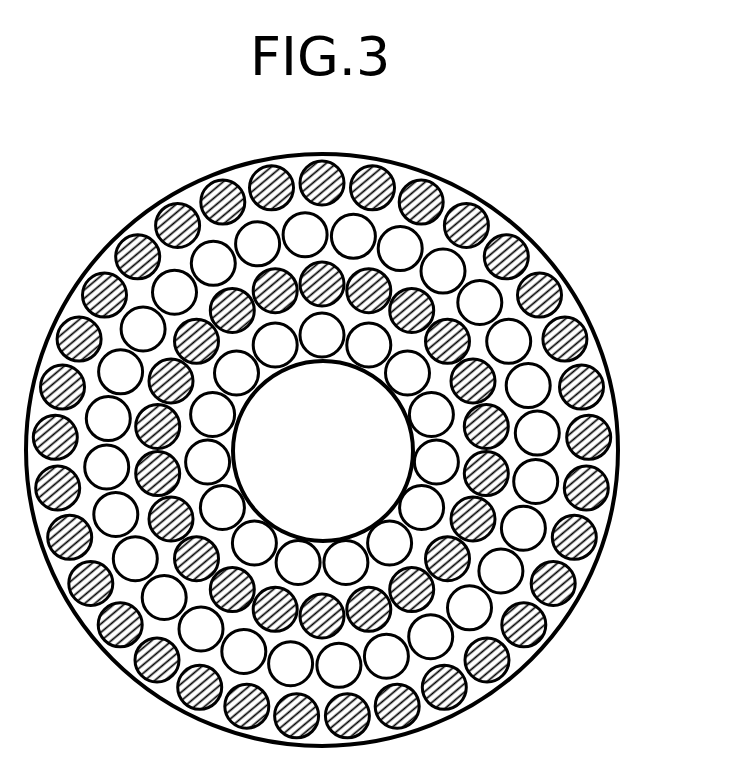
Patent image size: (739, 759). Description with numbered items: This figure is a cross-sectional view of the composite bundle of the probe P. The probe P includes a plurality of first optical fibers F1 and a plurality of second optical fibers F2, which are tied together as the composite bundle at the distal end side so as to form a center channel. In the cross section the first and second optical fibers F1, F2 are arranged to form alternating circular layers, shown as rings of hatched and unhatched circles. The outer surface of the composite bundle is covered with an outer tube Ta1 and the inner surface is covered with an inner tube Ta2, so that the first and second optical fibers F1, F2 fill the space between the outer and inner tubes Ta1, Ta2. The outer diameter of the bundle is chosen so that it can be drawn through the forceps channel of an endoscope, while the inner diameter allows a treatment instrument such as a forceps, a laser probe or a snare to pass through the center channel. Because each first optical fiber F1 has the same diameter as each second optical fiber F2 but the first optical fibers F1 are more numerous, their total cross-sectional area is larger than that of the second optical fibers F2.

The probe P is at (620, 258).
The outer tube Ta1 is at (584, 585).
The inner tube Ta2 is at (404, 402).
The first optical fibers F1 is at (580, 344).
The second optical fibers F2 is at (538, 398).